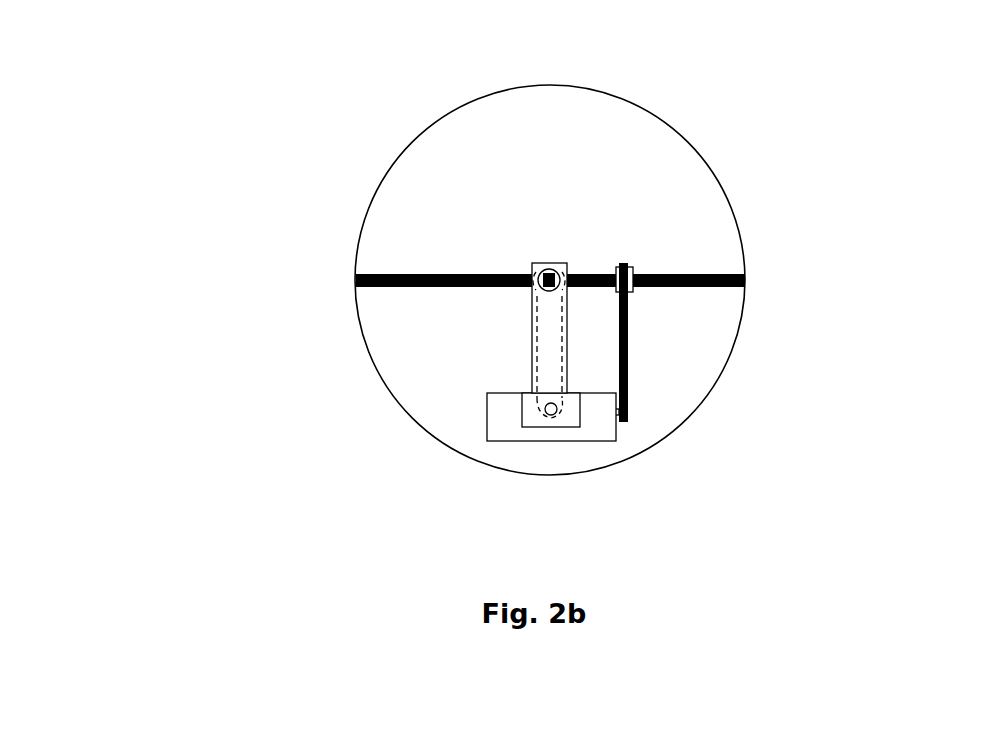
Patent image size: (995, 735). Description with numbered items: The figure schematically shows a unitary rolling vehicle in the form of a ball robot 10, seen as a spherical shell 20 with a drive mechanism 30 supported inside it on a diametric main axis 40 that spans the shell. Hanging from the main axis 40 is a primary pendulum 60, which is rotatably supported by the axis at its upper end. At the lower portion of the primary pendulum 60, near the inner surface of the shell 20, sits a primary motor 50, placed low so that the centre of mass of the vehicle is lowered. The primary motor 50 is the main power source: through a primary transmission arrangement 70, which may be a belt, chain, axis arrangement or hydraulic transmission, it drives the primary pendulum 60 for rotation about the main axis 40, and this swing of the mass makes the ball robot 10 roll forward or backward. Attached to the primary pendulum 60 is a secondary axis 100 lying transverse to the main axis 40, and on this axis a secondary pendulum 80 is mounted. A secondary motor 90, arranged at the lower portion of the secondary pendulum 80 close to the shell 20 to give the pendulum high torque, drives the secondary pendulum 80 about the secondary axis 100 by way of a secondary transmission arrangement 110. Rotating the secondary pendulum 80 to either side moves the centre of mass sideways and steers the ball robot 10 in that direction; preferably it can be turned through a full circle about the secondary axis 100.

The ball robot 10 is at (230, 129).
The shell 20 is at (550, 85).
The drive mechanism 30 is at (673, 395).
The diametric main axis 40 is at (356, 280).
The primary motor 50 is at (629, 413).
The primary pendulum 60 is at (603, 441).
The primary transmission arrangement 70 is at (628, 342).
The secondary pendulum 80 is at (575, 427).
The secondary motor 90 is at (551, 415).
The secondary axis 100 is at (549, 292).
The secondary transmission arrangement 110 is at (537, 352).